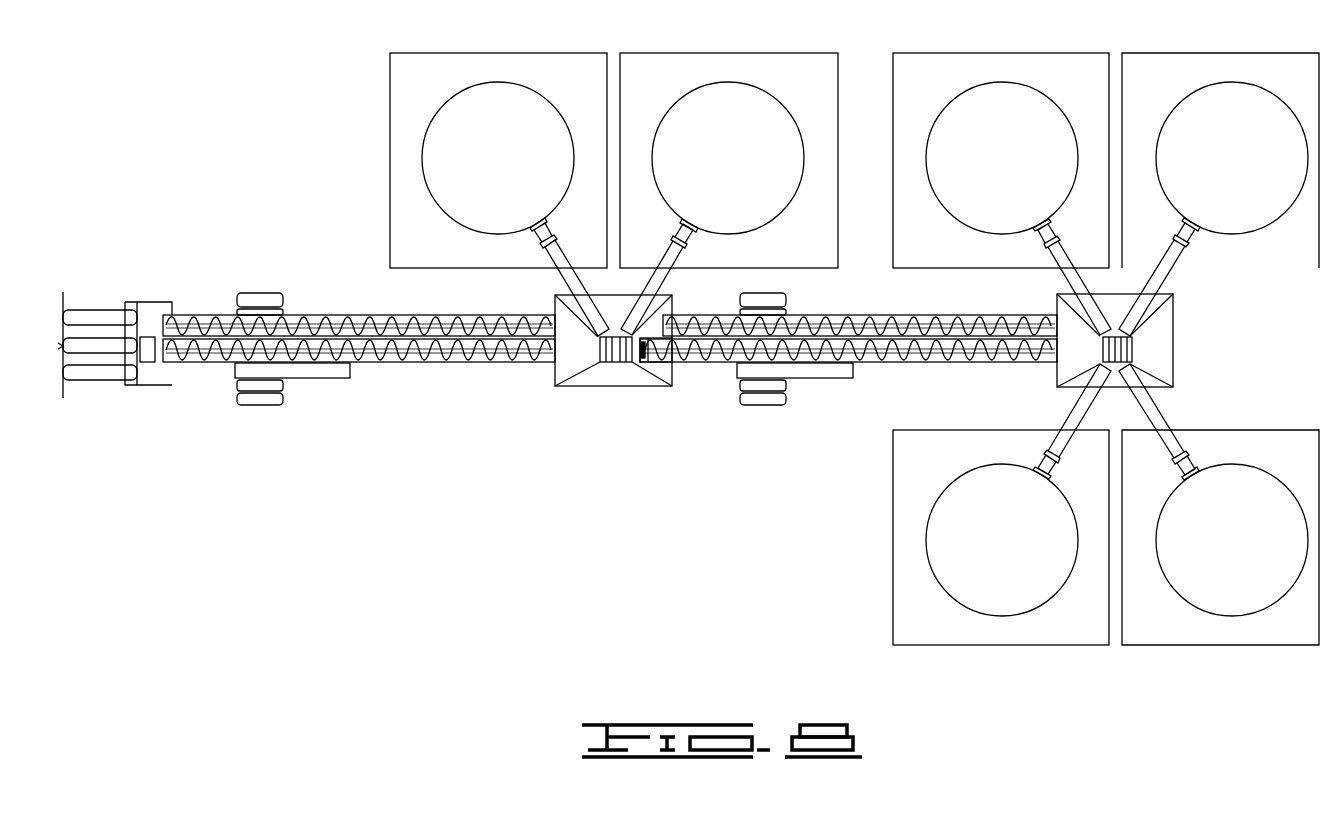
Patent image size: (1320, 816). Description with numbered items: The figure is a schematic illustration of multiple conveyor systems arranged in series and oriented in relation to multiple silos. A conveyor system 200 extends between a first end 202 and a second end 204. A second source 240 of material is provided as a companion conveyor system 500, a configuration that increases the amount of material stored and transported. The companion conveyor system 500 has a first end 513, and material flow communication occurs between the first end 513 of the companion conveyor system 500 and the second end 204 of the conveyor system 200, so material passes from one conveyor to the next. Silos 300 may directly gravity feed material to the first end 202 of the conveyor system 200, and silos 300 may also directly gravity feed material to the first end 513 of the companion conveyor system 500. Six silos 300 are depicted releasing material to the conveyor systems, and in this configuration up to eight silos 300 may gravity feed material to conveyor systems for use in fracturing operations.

The silos 300 is at (481, 163).
The second source 240 is at (306, 408).
The companion conveyor system 500 is at (302, 451).
The second end 204 is at (637, 386).
The first end 513 is at (691, 386).
The conveyor system 200 is at (843, 424).
The first end 202 is at (1205, 325).